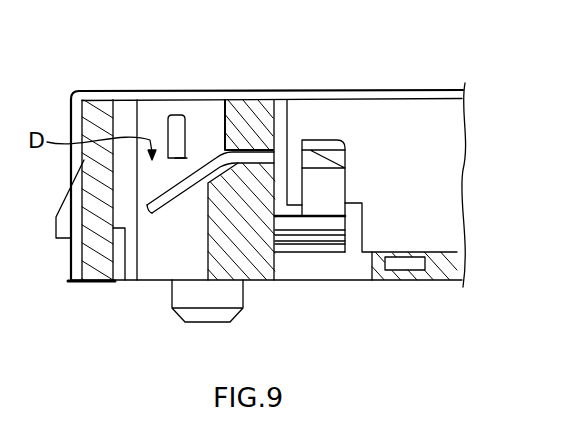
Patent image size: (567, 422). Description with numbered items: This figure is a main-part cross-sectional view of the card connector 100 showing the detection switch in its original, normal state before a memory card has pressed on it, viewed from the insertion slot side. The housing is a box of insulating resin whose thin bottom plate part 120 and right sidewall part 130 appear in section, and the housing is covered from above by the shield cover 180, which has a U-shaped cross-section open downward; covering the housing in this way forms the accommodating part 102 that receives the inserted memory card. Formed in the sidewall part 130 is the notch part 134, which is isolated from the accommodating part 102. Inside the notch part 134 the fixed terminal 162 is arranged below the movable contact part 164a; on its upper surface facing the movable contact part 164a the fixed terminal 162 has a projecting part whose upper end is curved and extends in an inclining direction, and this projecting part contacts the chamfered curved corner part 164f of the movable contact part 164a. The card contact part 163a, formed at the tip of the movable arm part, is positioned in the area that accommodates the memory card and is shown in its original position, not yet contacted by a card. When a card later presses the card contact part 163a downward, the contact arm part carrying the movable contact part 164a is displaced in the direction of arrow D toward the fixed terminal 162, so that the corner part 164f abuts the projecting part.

The card connector 100 is at (468, 41).
The accommodating part 102 is at (438, 130).
The bottom plate part 120 is at (442, 272).
The sidewall part 130 is at (100, 99).
The notch part 134 is at (197, 120).
The fixed terminal 162 is at (161, 212).
The card contact part 163a is at (315, 160).
The movable contact part 164a is at (177, 123).
The curved corner part 164f is at (188, 160).
The shield cover 180 is at (315, 97).